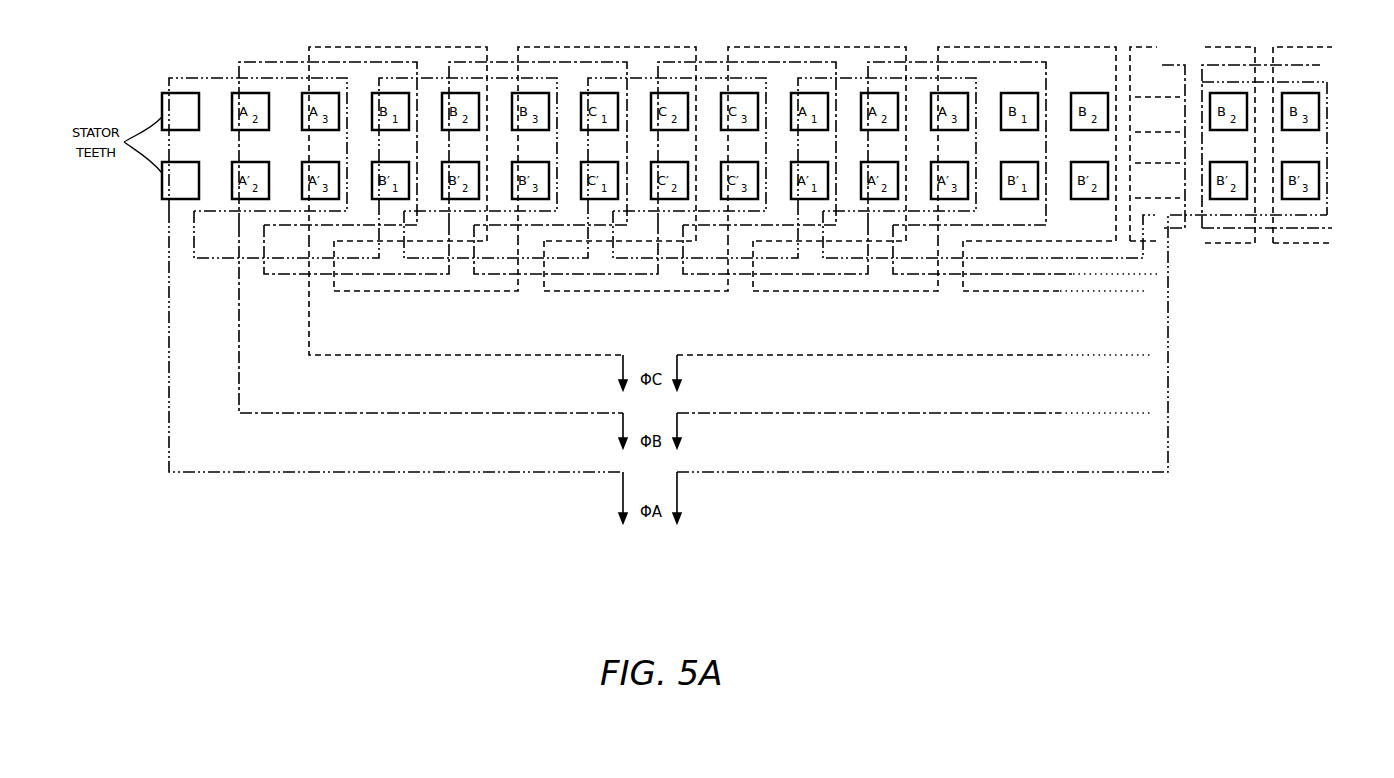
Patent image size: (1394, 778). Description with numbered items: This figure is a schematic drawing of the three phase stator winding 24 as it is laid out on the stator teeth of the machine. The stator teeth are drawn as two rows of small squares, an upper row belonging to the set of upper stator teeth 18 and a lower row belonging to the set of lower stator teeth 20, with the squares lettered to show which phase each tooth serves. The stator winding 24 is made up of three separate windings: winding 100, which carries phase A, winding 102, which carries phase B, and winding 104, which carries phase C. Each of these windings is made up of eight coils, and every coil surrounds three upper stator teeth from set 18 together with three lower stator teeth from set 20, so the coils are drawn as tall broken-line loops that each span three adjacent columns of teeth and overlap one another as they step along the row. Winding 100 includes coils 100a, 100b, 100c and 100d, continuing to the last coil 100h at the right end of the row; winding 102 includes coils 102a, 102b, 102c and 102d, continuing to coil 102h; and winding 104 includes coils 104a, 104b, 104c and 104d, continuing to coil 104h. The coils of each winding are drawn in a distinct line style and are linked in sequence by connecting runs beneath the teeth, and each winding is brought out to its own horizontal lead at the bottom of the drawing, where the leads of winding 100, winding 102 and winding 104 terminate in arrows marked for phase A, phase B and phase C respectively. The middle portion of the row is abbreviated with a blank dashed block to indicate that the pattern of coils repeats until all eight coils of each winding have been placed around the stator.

The set of upper stator teeth 18 is at (157, 102).
The set of lower stator teeth 20 is at (155, 193).
The stator winding 24 is at (918, 538).
The winding 100 is at (897, 473).
The winding 102 is at (897, 415).
The winding 104 is at (897, 356).
The coil 100a is at (186, 77).
The coil 100b is at (396, 77).
The coil 100c is at (605, 77).
The coil 100d is at (815, 77).
The coil 100h is at (1308, 82).
The coil 102a is at (272, 62).
The coil 102b is at (482, 62).
The coil 102c is at (691, 62).
The coil 102d is at (901, 62).
The coil 102h is at (1322, 64).
The coil 104a is at (348, 47).
The coil 104b is at (558, 47).
The coil 104c is at (767, 47).
The coil 104d is at (977, 47).
The coil 104h is at (1278, 47).